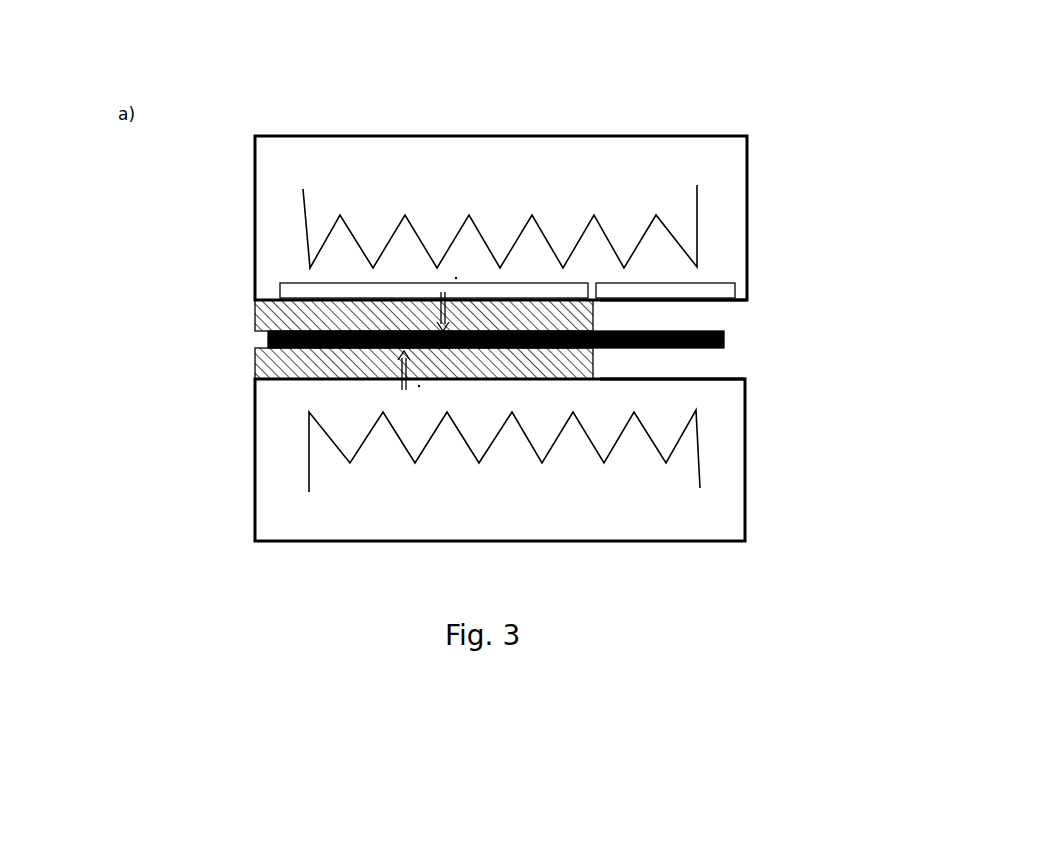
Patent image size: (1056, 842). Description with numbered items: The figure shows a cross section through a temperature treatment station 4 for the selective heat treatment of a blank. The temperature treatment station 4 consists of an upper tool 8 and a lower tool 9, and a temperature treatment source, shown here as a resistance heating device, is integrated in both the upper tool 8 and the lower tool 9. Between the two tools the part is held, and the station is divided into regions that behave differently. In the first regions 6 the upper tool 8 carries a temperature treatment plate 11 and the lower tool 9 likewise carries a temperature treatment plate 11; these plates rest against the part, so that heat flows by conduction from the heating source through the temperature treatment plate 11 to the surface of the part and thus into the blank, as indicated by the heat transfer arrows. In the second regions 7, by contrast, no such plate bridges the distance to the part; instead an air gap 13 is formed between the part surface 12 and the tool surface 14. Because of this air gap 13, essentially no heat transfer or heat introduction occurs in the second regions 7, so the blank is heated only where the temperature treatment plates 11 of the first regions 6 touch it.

The temperature treatment station 4 is at (264, 99).
The first regions 6 is at (380, 285).
The second regions 7 is at (674, 300).
The upper tool 8 is at (740, 178).
The lower tool 9 is at (723, 519).
The temperature treatment plate 11 is at (255, 315).
The part surface 12 is at (705, 327).
The air gap 13 is at (697, 368).
The tool surface 14 is at (680, 302).